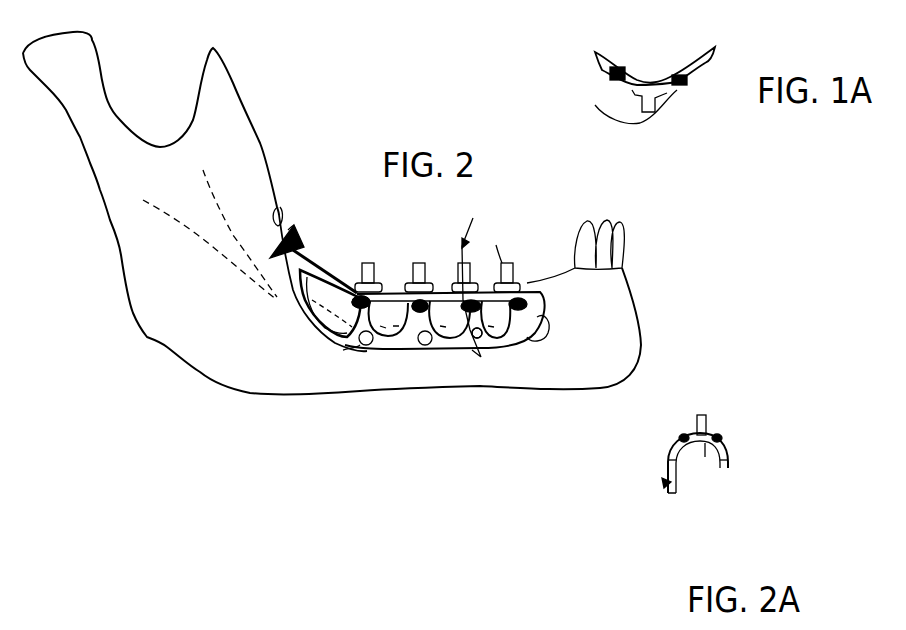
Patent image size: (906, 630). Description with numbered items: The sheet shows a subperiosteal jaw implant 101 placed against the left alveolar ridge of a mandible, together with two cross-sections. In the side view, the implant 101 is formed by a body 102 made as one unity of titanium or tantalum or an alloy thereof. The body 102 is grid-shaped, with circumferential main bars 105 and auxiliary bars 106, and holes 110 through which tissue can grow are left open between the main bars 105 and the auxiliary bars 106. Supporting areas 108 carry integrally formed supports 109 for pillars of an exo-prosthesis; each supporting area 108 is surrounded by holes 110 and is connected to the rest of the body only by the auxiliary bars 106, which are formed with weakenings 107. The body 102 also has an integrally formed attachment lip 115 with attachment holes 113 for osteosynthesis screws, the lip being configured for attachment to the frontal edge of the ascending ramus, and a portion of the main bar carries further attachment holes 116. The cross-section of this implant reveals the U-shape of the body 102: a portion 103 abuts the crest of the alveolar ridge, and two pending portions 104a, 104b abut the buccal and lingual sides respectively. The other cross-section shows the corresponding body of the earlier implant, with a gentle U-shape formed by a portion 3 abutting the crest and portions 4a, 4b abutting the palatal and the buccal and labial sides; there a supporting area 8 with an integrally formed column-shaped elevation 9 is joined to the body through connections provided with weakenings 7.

In FIG. 1A, the portion abutting the crest of the alveolar ridge 3 is at (692, 72).
In FIG. 1A, the portion abutting the palatal side 4a is at (713, 58).
In FIG. 1A, the portion abutting the buccal and labial sides 4b is at (595, 52).
In FIG. 1A, the weakening 7 is at (612, 83).
In FIG. 1A, the supporting area 8 is at (648, 88).
In FIG. 1A, the column-shaped elevation 9 is at (652, 102).
In FIG. 2, the subperiosteal jaw implant 101 is at (541, 204).
In FIG. 2A, the subperiosteal jaw implant 101 is at (758, 406).
In FIG. 2, the body 102 is at (412, 348).
In FIG. 2A, the portion abutting the crest of the alveolar ridge 103 is at (680, 435).
In FIG. 2, the pending portion abutting the buccal side 104a is at (345, 348).
In FIG. 2A, the pending portion abutting the buccal side 104a is at (667, 458).
In FIG. 2A, the pending portion abutting the lingual side 104b is at (727, 462).
In FIG. 2, the main bar 105 is at (330, 356).
In FIG. 2, the auxiliary bar 106 is at (357, 293).
In FIG. 2A, the auxiliary bar 106 is at (719, 434).
In FIG. 2, the weakening 107 is at (380, 285).
In FIG. 2A, the weakening 107 is at (722, 440).
In FIG. 2A, the supporting area 108 is at (703, 462).
In FIG. 2, the support 109 is at (470, 260).
In FIG. 2A, the support 109 is at (700, 414).
In FIG. 2, the hole 110 is at (300, 312).
In FIG. 2, the attachment hole 113 is at (301, 270).
In FIG. 2, the attachment lip 115 is at (288, 215).
In FIG. 2, the attachment hole 116 is at (478, 342).
In FIG. 2A, the attachment hole 116 is at (672, 488).